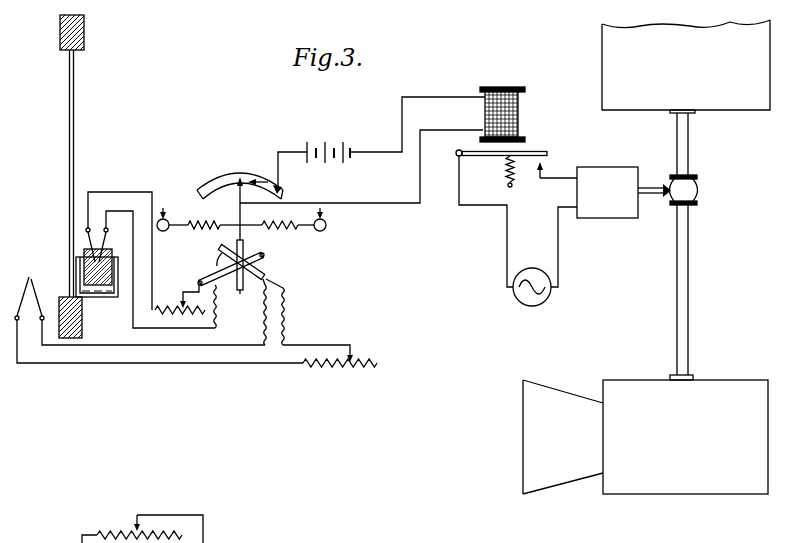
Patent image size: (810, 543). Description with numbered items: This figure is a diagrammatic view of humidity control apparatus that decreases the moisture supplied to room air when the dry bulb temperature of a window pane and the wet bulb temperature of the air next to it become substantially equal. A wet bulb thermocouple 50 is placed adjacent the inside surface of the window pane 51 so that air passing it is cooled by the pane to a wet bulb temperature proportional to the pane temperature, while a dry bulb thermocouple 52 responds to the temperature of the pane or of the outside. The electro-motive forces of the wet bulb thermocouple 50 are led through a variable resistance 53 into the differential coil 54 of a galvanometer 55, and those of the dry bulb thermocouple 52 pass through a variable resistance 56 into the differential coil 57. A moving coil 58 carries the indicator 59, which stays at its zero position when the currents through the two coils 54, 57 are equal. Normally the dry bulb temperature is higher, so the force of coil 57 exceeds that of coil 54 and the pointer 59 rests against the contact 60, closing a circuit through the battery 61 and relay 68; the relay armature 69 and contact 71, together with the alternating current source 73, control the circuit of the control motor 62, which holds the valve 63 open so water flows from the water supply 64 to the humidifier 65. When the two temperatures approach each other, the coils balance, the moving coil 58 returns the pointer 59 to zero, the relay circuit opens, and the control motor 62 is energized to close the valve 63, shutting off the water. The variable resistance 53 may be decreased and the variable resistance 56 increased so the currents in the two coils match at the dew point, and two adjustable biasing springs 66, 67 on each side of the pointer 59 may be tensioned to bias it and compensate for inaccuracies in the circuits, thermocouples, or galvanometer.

The wet bulb thermocouple 50 is at (108, 236).
The window pane 51 is at (75, 140).
The dry bulb thermocouple 52 is at (30, 278).
The variable resistance 53 is at (174, 304).
The differential coil 54 is at (265, 257).
The galvanometer 55 is at (283, 193).
The variable resistance 56 is at (347, 368).
The differential coil 57 is at (265, 276).
The moving coil 58 is at (240, 294).
The indicator 59 is at (240, 208).
The contact 60 is at (252, 176).
The battery 61 is at (348, 146).
The control motor 62 is at (580, 166).
The valve 63 is at (698, 190).
The water supply 64 is at (605, 52).
The humidifier 65 is at (614, 383).
The adjustable biasing spring 66 is at (203, 230).
The adjustable biasing spring 67 is at (312, 232).
The relay 68 is at (520, 108).
The armature 69 is at (527, 151).
The contact 71 is at (543, 167).
The alternating current source 73 is at (550, 297).